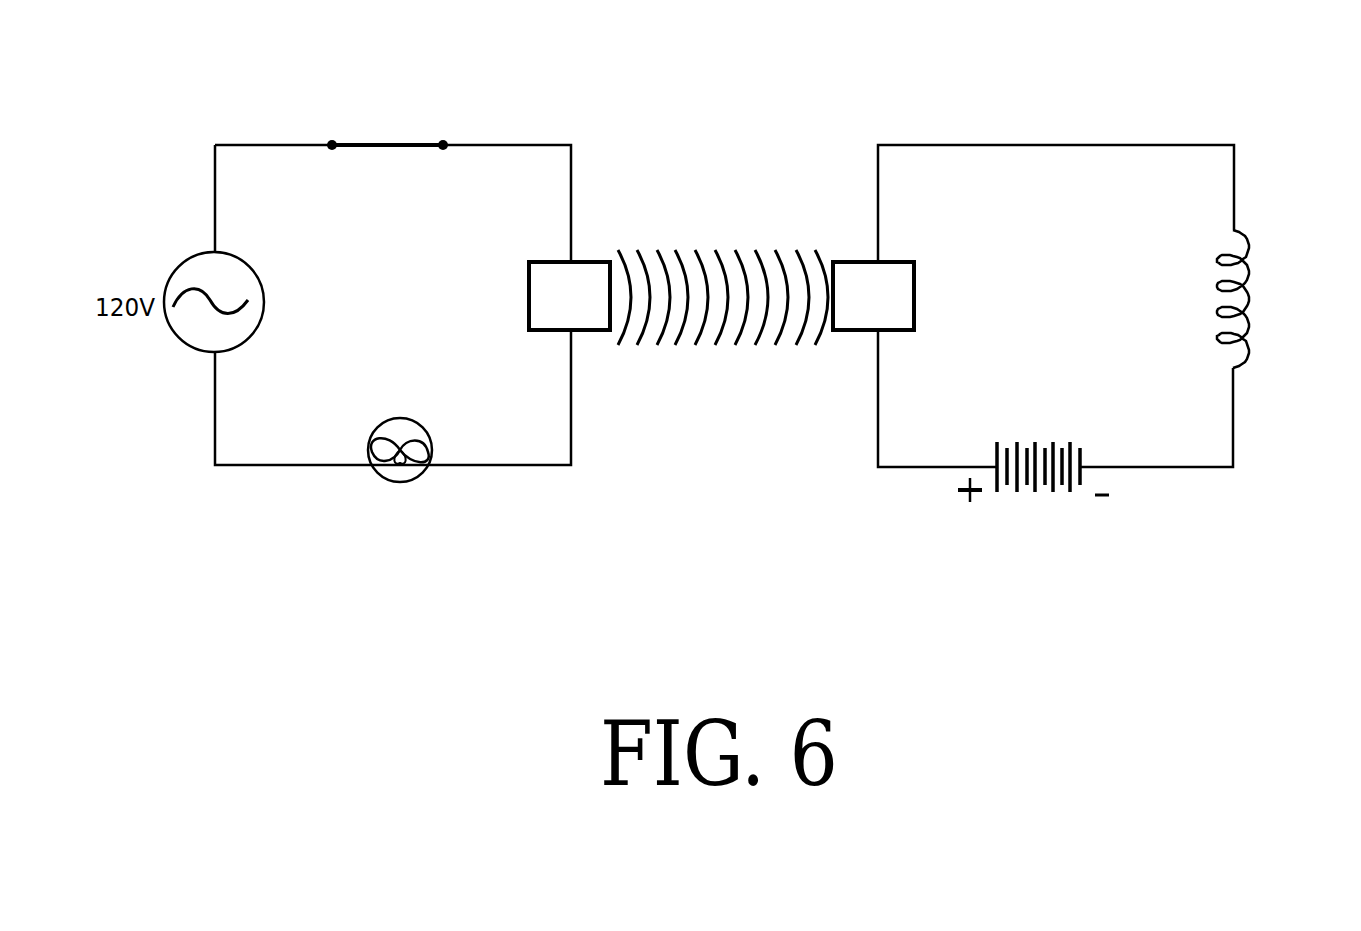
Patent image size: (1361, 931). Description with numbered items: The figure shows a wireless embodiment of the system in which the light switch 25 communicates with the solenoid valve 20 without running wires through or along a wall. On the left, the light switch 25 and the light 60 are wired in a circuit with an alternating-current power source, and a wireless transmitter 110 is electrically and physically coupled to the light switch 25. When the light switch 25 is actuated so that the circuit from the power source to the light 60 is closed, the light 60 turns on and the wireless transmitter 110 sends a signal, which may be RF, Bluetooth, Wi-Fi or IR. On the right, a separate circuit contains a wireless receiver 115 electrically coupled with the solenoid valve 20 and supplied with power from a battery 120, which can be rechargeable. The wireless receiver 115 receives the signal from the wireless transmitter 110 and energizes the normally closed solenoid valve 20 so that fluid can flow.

The solenoid valve 20 is at (1247, 258).
The light switch 25 is at (378, 145).
The light 60 is at (397, 482).
The wireless transmitter 110 is at (590, 299).
The wireless receiver 115 is at (891, 299).
The battery 120 is at (1028, 492).